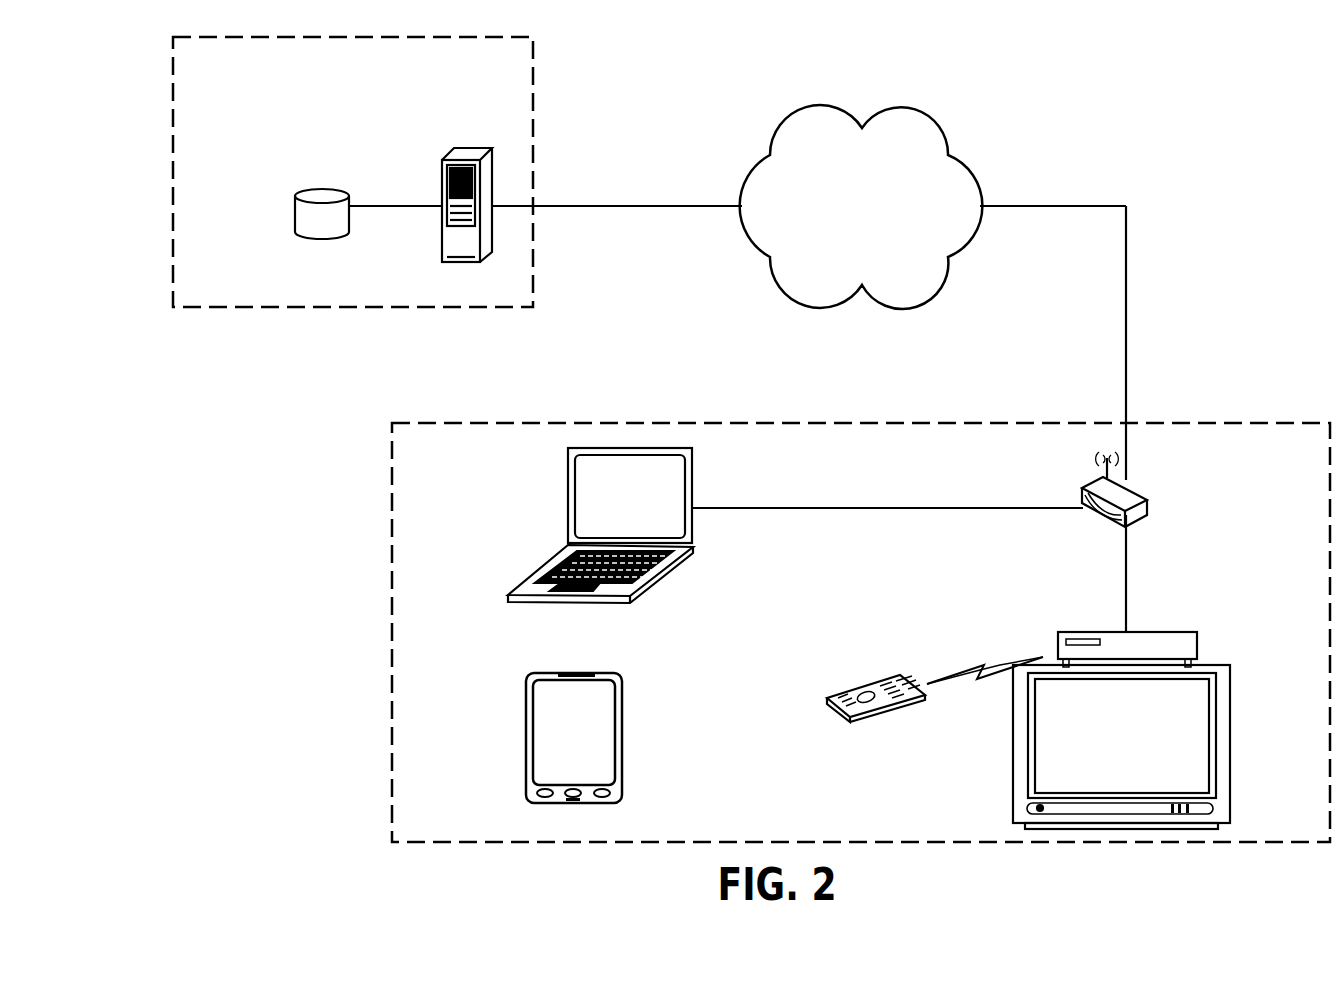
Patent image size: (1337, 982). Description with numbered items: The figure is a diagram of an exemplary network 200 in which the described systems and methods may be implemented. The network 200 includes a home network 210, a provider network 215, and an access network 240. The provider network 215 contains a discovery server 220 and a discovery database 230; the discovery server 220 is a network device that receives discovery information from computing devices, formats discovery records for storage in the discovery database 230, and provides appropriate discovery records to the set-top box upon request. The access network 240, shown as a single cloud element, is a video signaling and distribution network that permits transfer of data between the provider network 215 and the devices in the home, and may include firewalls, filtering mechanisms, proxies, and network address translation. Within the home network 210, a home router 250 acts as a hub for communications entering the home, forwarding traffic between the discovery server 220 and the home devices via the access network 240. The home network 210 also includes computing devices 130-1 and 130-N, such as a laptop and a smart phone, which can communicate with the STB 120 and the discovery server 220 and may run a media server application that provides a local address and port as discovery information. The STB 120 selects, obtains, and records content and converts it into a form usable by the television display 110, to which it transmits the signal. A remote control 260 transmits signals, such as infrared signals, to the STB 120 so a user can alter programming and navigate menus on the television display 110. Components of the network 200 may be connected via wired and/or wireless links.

The network 200 is at (1200, 84).
The provider network 215 is at (533, 92).
The discovery server 220 is at (446, 160).
The discovery database 230 is at (309, 192).
The access network 240 is at (842, 245).
The home network 210 is at (885, 423).
The computing device 130-1 is at (568, 483).
The computing device 130-N is at (530, 733).
The home router 250 is at (1135, 492).
The STB 120 is at (1070, 632).
The television display 110 is at (1230, 718).
The remote control 260 is at (858, 685).